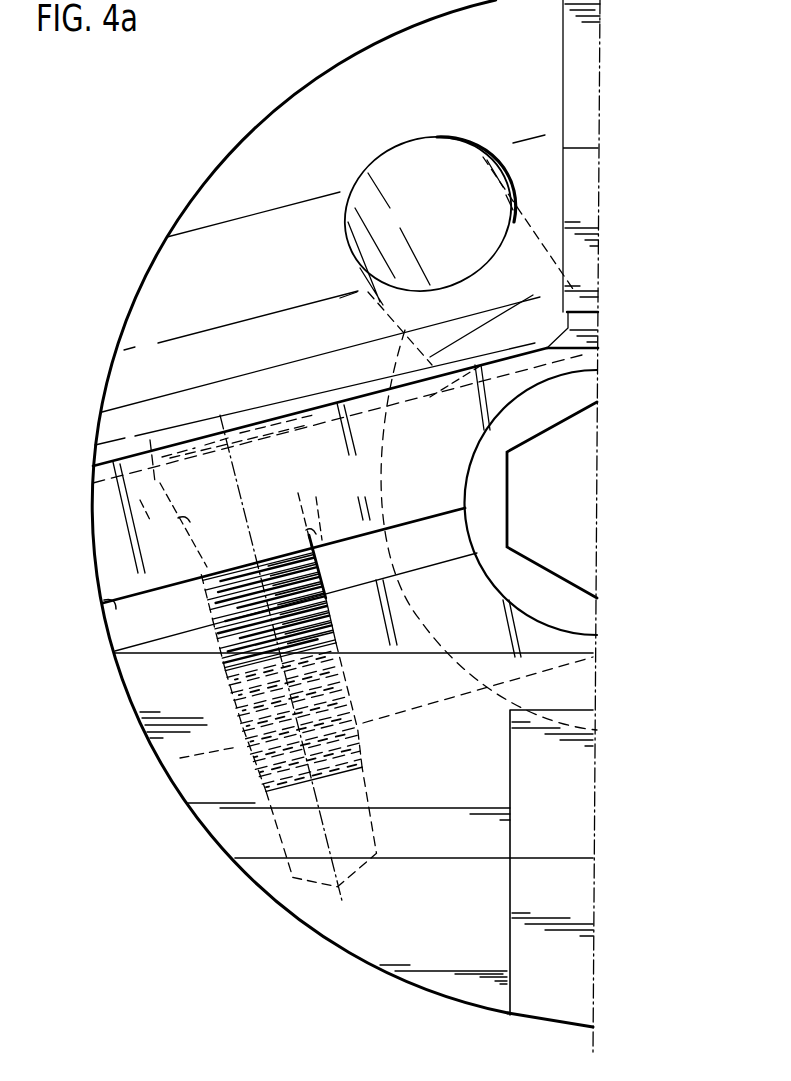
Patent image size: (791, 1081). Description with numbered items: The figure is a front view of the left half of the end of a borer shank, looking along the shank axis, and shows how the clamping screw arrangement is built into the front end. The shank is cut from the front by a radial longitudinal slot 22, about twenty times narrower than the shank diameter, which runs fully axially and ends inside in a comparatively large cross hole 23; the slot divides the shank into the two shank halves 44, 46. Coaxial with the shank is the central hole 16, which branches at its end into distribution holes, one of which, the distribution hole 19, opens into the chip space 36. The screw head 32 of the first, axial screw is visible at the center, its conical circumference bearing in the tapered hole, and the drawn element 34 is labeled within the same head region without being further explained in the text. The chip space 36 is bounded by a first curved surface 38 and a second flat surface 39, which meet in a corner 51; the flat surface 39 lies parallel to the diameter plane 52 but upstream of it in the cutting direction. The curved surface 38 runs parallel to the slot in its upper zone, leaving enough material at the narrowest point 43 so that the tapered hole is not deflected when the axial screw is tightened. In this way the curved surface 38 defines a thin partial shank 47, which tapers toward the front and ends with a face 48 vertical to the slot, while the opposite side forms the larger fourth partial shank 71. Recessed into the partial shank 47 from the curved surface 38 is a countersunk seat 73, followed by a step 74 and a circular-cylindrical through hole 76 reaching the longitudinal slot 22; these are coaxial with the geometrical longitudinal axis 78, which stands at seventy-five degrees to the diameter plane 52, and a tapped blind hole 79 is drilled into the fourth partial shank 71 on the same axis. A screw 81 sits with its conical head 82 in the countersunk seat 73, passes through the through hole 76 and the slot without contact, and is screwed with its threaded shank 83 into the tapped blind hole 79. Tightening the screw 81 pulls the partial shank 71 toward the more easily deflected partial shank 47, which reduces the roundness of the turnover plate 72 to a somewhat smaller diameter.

The central hole 16 is at (500, 692).
The distribution hole 19 is at (530, 211).
The radial longitudinal slot 22 is at (103, 617).
The cross hole 23 is at (177, 757).
The screw head 32 is at (567, 615).
The hexagonal recess 34 is at (570, 420).
The chip space 36 is at (345, 172).
The first curved surface 38 is at (242, 198).
The second flat surface 39 is at (562, 320).
The narrowest point 43 is at (555, 362).
The shank half 44 is at (172, 250).
The shank half 46 is at (187, 782).
The partial shank 47 is at (342, 468).
The face 48 is at (388, 450).
The corner 51 is at (553, 348).
The diameter plane 52 is at (600, 43).
The fourth partial shank 71 is at (462, 788).
The turnover plate 72 is at (577, 905).
The countersunk seat 73 is at (157, 477).
The step 74 is at (182, 523).
The through hole 76 is at (310, 523).
The geometrical longitudinal axis 78 is at (223, 673).
The tapped blind hole 79 is at (367, 715).
The screw 81 is at (203, 615).
The conical head 82 is at (247, 412).
The threaded shank 83 is at (330, 613).